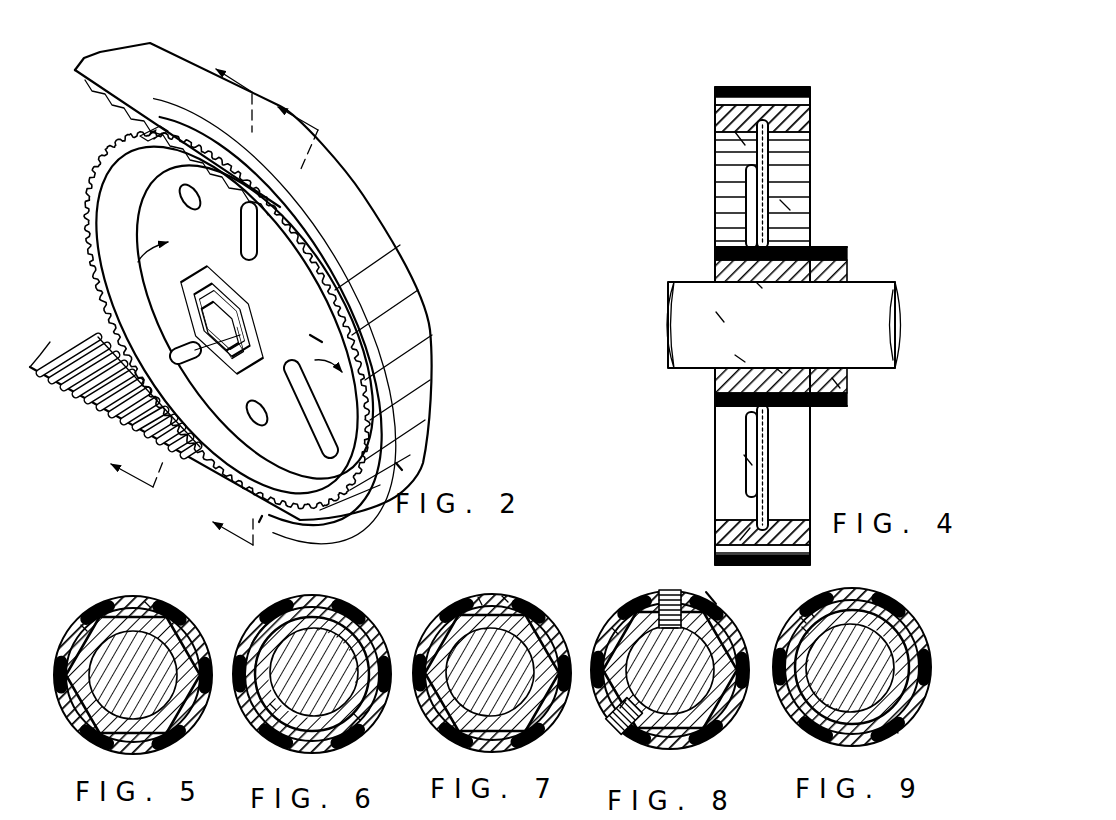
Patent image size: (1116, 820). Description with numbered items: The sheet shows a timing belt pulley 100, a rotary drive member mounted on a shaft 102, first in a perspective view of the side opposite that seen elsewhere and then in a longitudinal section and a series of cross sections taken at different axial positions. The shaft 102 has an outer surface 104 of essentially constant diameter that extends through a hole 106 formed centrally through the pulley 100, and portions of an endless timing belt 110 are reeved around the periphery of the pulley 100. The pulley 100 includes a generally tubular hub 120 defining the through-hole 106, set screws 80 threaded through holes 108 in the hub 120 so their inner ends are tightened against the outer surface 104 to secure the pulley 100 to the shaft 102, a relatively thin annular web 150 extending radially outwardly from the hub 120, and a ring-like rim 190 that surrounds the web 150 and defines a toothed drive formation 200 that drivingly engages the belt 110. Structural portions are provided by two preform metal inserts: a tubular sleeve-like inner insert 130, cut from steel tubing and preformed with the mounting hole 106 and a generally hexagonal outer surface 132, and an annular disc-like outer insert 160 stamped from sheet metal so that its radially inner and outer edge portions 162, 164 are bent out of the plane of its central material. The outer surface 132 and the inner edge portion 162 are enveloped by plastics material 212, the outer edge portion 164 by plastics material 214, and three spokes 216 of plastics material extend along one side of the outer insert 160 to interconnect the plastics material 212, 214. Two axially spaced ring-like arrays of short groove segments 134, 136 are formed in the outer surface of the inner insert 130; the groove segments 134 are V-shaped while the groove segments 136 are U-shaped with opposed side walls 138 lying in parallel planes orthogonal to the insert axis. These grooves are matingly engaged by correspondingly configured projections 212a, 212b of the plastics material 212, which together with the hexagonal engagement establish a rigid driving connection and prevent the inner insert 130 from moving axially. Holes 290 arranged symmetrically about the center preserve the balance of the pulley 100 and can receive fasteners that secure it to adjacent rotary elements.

In FIG. 8, the set screws 80 is at (635, 643).
In FIG. 2, the timing belt pulley 100 is at (90, 196).
In FIG. 4, the timing belt pulley 100 is at (832, 120).
In FIG. 2, the shaft 102 is at (323, 228).
In FIG. 4, the shaft 102 is at (872, 281).
In FIG. 5, the shaft 102 is at (152, 664).
In FIG. 6, the shaft 102 is at (338, 664).
In FIG. 7, the shaft 102 is at (508, 661).
In FIG. 8, the shaft 102 is at (680, 657).
In FIG. 9, the shaft 102 is at (873, 671).
In FIG. 4, the outer surface 104 is at (882, 305).
In FIG. 5, the outer surface 104 is at (133, 675).
In FIG. 6, the outer surface 104 is at (314, 672).
In FIG. 7, the outer surface 104 is at (506, 634).
In FIG. 8, the outer surface 104 is at (701, 679).
In FIG. 9, the outer surface 104 is at (879, 688).
In FIG. 4, the hole 106 is at (742, 358).
In FIG. 5, the hole 106 is at (71, 749).
In FIG. 6, the hole 106 is at (321, 734).
In FIG. 9, the hole 106 is at (786, 736).
In FIG. 8, the holes 108 is at (629, 657).
In FIG. 2, the endless timing belt 110 is at (160, 57).
In FIG. 4, the endless timing belt 110 is at (770, 88).
In FIG. 8, the endless timing belt 110 is at (681, 568).
In FIG. 2, the hub 120 is at (362, 295).
In FIG. 4, the hub 120 is at (730, 245).
In FIG. 5, the hub 120 is at (128, 653).
In FIG. 6, the hub 120 is at (312, 651).
In FIG. 7, the hub 120 is at (492, 651).
In FIG. 8, the hub 120 is at (681, 682).
In FIG. 9, the hub 120 is at (856, 664).
In FIG. 2, the inner insert 130 is at (200, 292).
In FIG. 4, the inner insert 130 is at (712, 271).
In FIG. 5, the inner insert 130 is at (151, 692).
In FIG. 6, the inner insert 130 is at (333, 682).
In FIG. 7, the inner insert 130 is at (516, 693).
In FIG. 8, the inner insert 130 is at (670, 670).
In FIG. 9, the inner insert 130 is at (852, 640).
In FIG. 5, the outer surface 132 is at (176, 592).
In FIG. 7, the outer surface 132 is at (502, 573).
In FIG. 9, the outer surface 132 is at (908, 581).
In FIG. 4, the groove segments 134 is at (730, 274).
In FIG. 6, the groove segments 134 is at (319, 676).
In FIG. 4, the groove segments 136 is at (822, 283).
In FIG. 9, the groove segments 136 is at (880, 668).
In FIG. 4, the side walls 138 is at (846, 262).
In FIG. 2, the annular web 150 is at (185, 287).
In FIG. 4, the annular web 150 is at (790, 205).
In FIG. 2, the outer insert 160 is at (259, 521).
In FIG. 4, the outer insert 160 is at (744, 461).
In FIG. 4, the inner edge portion 162 is at (760, 284).
In FIG. 4, the outer edge portion 164 is at (735, 136).
In FIG. 2, the rim 190 is at (106, 222).
In FIG. 4, the rim 190 is at (800, 514).
In FIG. 2, the drive formation 200 is at (135, 136).
In FIG. 2, the plastics material 212 is at (322, 342).
In FIG. 4, the plastics material 212 is at (806, 238).
In FIG. 5, the plastics material 212 is at (66, 612).
In FIG. 6, the plastics material 212 is at (275, 591).
In FIG. 7, the plastics material 212 is at (534, 588).
In FIG. 8, the plastics material 212 is at (599, 608).
In FIG. 9, the plastics material 212 is at (788, 596).
In FIG. 4, the projections 212a is at (718, 320).
In FIG. 6, the projections 212a is at (242, 719).
In FIG. 4, the projections 212b is at (838, 383).
In FIG. 9, the projections 212b is at (781, 615).
In FIG. 2, the plastics material 214 is at (396, 462).
In FIG. 4, the plastics material 214 is at (812, 128).
In FIG. 2, the spokes 216 is at (315, 170).
In FIG. 4, the spokes 216 is at (752, 186).
In FIG. 2, the holes 290 is at (198, 185).